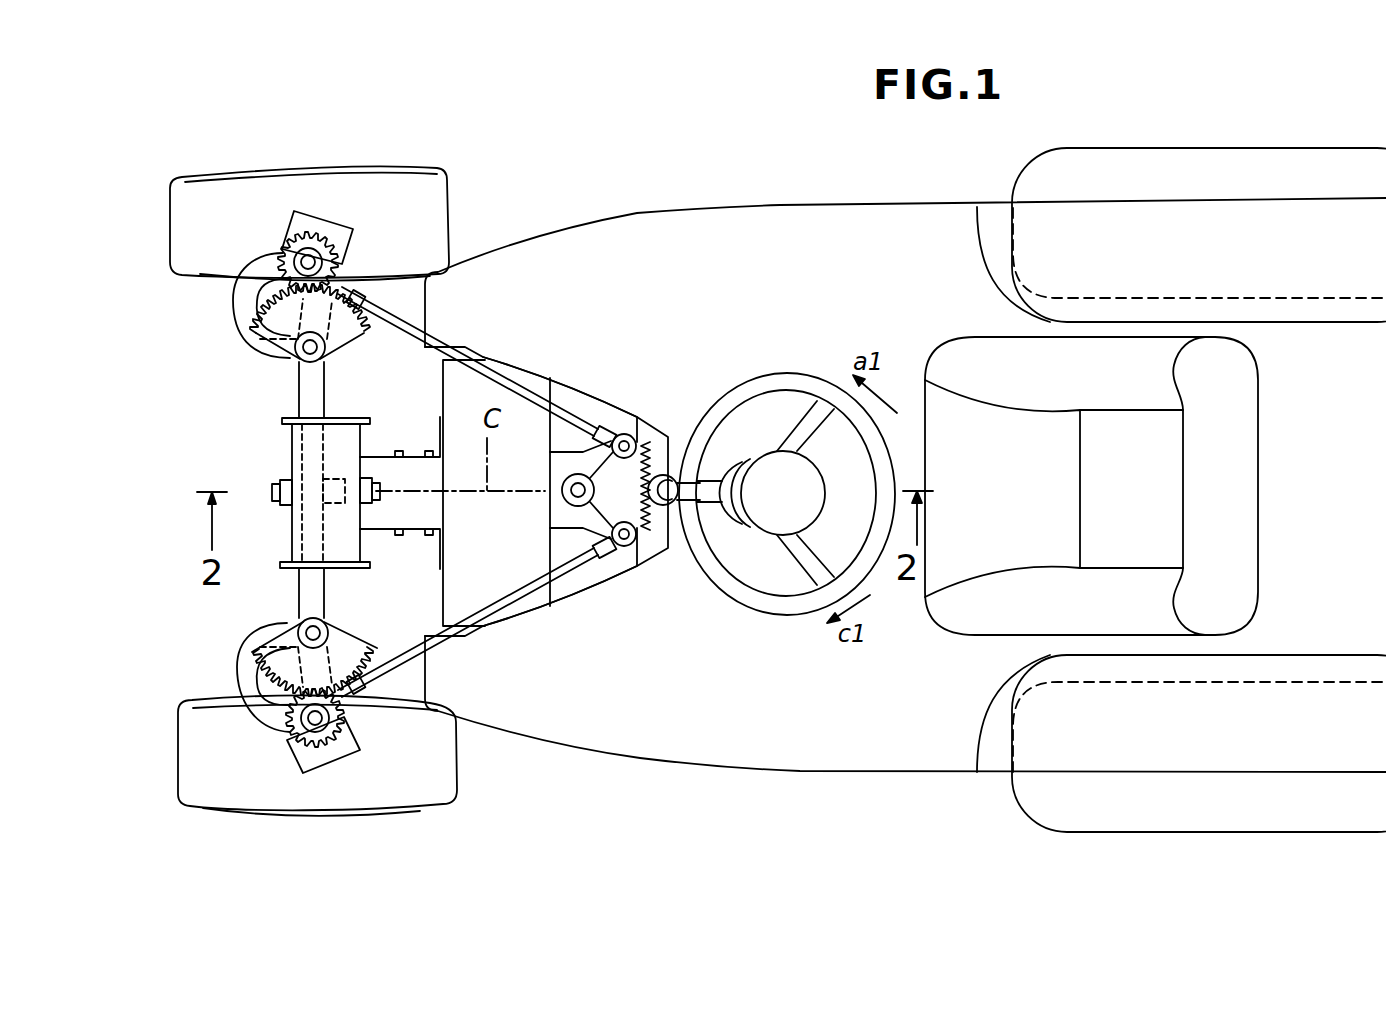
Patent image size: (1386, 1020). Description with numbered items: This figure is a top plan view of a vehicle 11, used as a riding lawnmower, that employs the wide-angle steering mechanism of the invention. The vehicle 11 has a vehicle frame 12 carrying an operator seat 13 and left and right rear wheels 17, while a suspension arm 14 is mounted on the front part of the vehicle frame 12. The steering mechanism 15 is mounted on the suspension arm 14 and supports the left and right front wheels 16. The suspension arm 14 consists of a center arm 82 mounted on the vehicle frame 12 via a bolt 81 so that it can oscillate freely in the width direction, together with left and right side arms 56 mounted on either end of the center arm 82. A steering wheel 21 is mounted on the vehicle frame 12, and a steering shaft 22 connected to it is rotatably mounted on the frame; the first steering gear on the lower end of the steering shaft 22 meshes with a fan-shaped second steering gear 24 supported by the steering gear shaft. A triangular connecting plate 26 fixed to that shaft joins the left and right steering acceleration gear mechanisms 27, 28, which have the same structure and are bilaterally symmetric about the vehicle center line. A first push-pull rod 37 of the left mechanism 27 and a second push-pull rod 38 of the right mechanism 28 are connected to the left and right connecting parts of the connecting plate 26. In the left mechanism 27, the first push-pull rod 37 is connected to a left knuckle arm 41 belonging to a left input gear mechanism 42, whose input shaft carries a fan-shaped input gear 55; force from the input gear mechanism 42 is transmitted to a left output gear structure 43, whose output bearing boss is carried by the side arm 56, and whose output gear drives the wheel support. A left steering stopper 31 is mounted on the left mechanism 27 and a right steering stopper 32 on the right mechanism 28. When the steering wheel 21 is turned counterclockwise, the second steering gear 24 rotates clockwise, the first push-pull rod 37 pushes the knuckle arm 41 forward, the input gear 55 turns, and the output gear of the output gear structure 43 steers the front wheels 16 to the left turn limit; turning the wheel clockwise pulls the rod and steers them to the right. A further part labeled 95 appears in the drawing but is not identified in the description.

The vehicle 11 is at (552, 165).
The vehicle frame 12 is at (641, 206).
The operator seat 13 is at (963, 337).
The suspension arm 14 is at (285, 395).
The steering mechanism 15 is at (692, 380).
The front wheels 16 is at (203, 186).
The rear wheels 17 is at (1228, 152).
The steering wheel 21 is at (800, 374).
The steering shaft 22 is at (713, 503).
The second steering gear 24 is at (650, 430).
The connecting plate 26 is at (648, 545).
The left steering acceleration gear mechanism 27 is at (403, 678).
The right steering acceleration gear mechanism 28 is at (410, 318).
The left steering stopper 31 is at (290, 768).
The right steering stopper 32 is at (290, 210).
The first push-pull rod 37 is at (515, 605).
The second push-pull rod 38 is at (517, 374).
The left knuckle arm 41 is at (337, 323).
The left input gear mechanism 42 is at (289, 363).
The left output gear structure 43 is at (272, 241).
The input gear 55 is at (275, 346).
The side arm 56 is at (232, 300).
The bolt 81 is at (282, 488).
The center arm 82 is at (293, 447).
The piston 95 is at (341, 503).